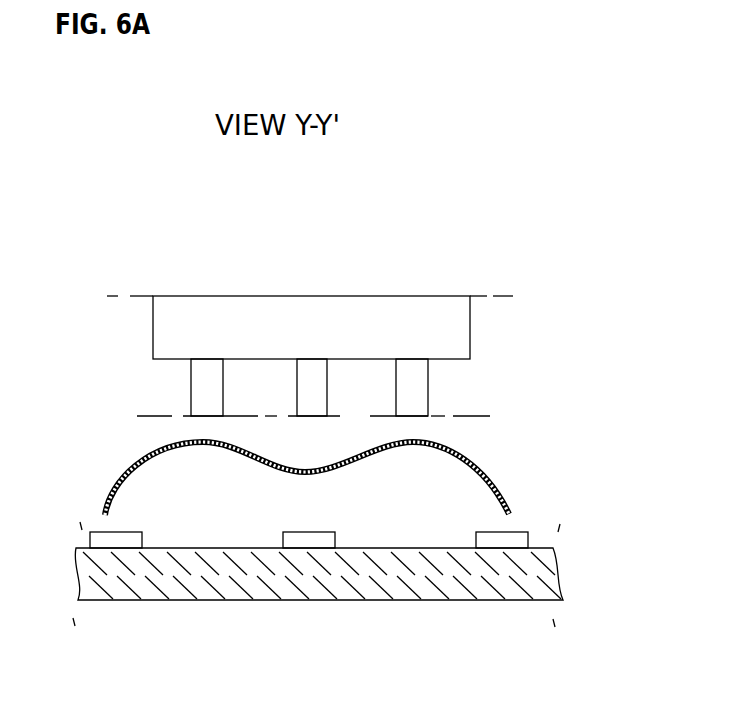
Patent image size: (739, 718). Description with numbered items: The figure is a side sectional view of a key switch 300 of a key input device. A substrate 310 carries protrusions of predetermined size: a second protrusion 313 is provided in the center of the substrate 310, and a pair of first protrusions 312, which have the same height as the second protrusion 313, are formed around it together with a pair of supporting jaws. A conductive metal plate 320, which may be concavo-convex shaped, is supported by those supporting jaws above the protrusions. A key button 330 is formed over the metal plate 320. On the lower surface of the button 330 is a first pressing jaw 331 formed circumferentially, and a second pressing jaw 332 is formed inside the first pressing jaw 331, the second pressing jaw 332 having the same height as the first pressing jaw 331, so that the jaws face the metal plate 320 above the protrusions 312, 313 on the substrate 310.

The key switch 300 is at (463, 233).
The substrate 310 is at (445, 585).
The first protrusions 312 is at (490, 549).
The second protrusion 313 is at (318, 540).
The conductive metal plate 320 is at (490, 464).
The key button 330 is at (470, 320).
The first pressing jaw 331 is at (191, 389).
The second pressing jaw 332 is at (311, 372).